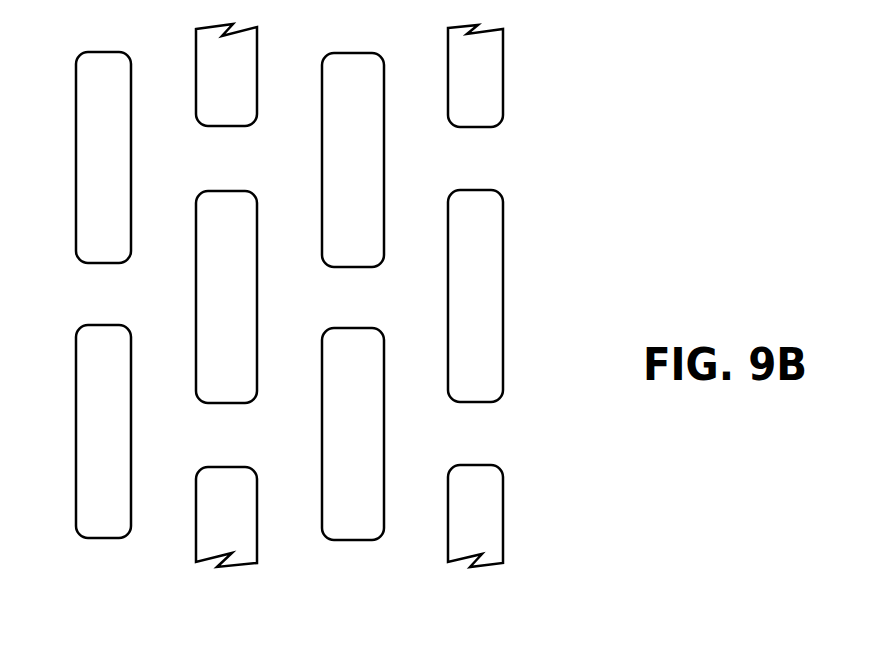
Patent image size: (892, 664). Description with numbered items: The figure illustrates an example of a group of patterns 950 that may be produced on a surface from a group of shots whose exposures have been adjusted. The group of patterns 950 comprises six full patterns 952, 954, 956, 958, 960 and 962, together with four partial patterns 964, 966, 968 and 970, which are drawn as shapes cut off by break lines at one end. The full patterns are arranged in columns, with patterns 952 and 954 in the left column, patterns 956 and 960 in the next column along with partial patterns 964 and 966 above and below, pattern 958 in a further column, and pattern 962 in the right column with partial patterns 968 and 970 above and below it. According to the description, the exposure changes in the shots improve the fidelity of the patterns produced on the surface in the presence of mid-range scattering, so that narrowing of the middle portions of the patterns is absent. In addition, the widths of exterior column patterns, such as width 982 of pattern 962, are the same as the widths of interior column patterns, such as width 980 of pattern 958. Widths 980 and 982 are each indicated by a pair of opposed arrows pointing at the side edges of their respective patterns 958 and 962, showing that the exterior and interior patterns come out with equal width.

The group of patterns 950 is at (657, 105).
The pattern 952 is at (107, 52).
The pattern 954 is at (108, 325).
The pattern 956 is at (235, 192).
The pattern 958 is at (358, 53).
The pattern 960 is at (362, 328).
The pattern 962 is at (503, 277).
The partial pattern 964 is at (257, 42).
The partial pattern 966 is at (228, 466).
The partial pattern 968 is at (503, 60).
The partial pattern 970 is at (503, 510).
The width 980 is at (405, 232).
The width 982 is at (526, 368).